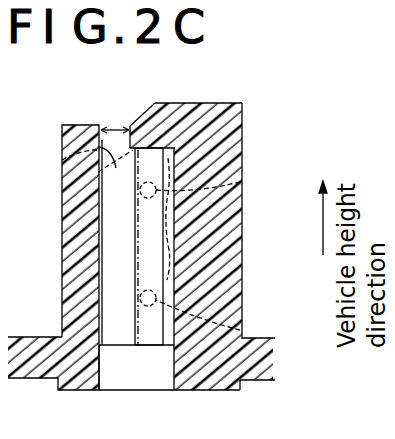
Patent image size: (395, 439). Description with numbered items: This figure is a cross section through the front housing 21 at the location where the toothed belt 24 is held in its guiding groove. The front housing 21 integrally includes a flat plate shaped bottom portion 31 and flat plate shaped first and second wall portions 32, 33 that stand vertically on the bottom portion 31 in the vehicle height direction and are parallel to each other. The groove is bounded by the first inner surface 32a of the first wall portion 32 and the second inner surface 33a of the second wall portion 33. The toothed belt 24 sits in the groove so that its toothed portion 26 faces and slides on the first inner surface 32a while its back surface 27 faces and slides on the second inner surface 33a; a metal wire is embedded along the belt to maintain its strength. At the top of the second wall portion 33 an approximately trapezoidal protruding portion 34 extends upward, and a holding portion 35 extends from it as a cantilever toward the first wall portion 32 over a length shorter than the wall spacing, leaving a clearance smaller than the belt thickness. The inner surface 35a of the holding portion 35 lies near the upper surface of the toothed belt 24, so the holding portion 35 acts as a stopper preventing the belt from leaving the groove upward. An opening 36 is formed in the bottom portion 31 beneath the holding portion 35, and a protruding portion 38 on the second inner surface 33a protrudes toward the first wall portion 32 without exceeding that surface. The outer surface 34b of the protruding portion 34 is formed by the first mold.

The front housing 21 is at (261, 101).
The toothed belt 24 is at (63, 157).
The toothed portion 26 is at (65, 278).
The back surface 27 is at (198, 300).
The bottom portion 31 is at (146, 378).
The first wall portion 32 is at (67, 233).
The first inner surface 32a is at (98, 212).
The second wall portion 33 is at (167, 222).
The second inner surface 33a is at (166, 252).
The protruding portion 34 is at (218, 103).
The outer surface 34b is at (188, 103).
The holding portion 35 is at (143, 117).
The inner surface 35a is at (205, 158).
The opening 36 is at (103, 377).
The protruding portion 38 is at (235, 219).